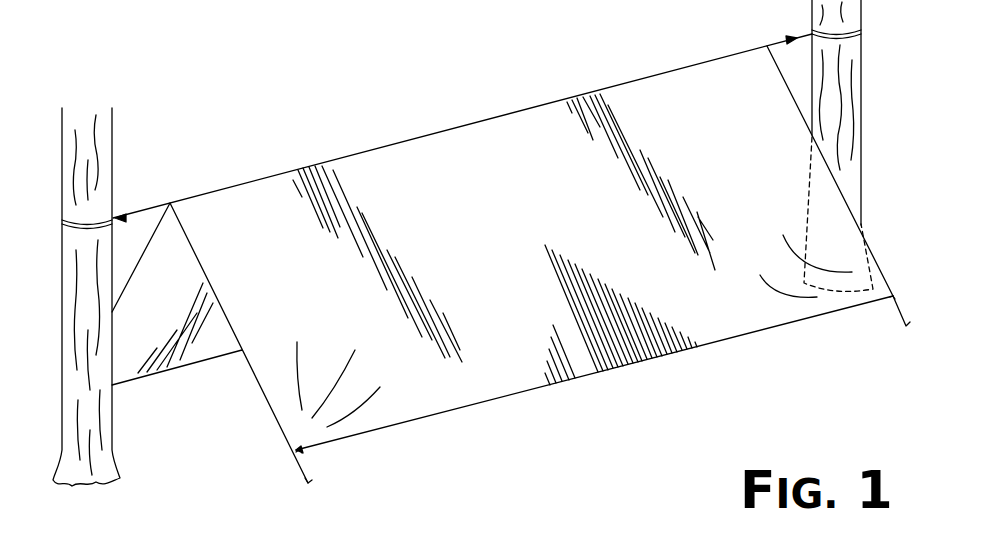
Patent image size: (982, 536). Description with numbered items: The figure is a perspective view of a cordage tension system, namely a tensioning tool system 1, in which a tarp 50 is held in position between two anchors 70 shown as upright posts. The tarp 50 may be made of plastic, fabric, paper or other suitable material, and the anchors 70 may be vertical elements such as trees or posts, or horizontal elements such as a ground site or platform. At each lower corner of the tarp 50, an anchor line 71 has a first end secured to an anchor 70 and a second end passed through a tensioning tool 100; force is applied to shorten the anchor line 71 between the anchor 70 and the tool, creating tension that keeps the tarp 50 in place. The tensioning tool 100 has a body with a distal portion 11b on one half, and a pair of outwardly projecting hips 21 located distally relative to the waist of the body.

The tensioning tool system 1 is at (226, 132).
The tarp 50 is at (403, 157).
The anchor 70 is at (68, 312).
The anchor line 71 is at (905, 312).
The tensioning tool 100 is at (893, 297).
The distal portion 11b is at (528, 535).
The hip 21 is at (371, 528).